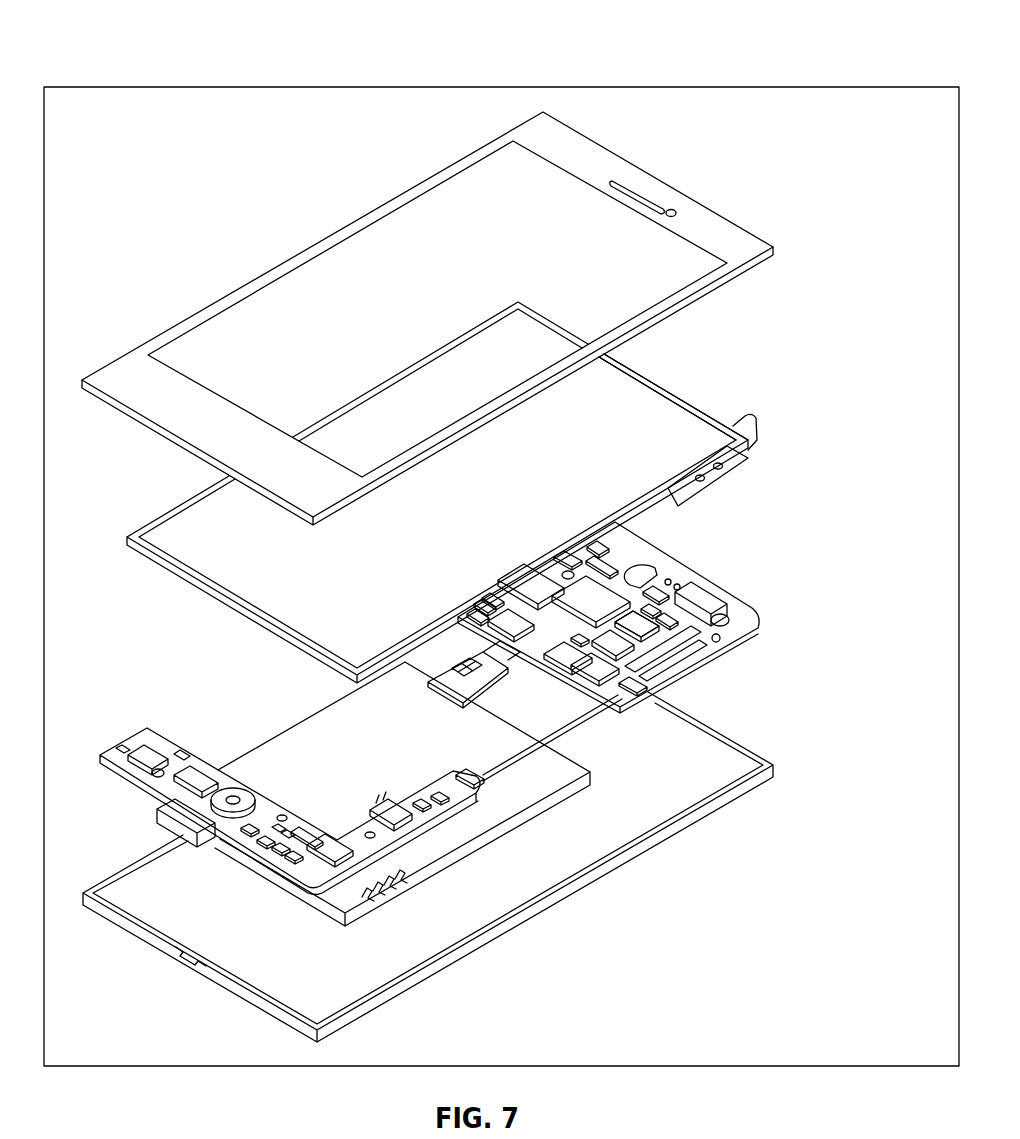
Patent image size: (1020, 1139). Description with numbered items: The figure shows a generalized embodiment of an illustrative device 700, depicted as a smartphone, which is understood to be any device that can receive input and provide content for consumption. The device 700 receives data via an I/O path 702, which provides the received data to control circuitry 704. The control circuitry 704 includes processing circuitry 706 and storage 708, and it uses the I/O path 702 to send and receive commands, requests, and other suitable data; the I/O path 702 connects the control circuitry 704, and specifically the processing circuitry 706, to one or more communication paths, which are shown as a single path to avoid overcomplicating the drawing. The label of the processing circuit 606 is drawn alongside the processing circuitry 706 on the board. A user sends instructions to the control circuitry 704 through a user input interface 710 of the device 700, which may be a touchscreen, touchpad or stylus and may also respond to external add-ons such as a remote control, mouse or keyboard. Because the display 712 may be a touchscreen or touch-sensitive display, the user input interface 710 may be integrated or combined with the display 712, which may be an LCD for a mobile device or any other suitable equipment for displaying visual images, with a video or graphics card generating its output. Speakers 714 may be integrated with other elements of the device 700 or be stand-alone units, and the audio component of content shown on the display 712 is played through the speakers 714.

The device 700 is at (498, 50).
The I/O path 702 is at (201, 810).
The control circuitry 704 is at (701, 650).
The processing circuitry 706 is at (780, 655).
The processing circuit 606 is at (679, 632).
The storage 708 is at (609, 612).
The user input interface 710 is at (760, 382).
The display 712 is at (685, 454).
The speakers 714 is at (669, 203).